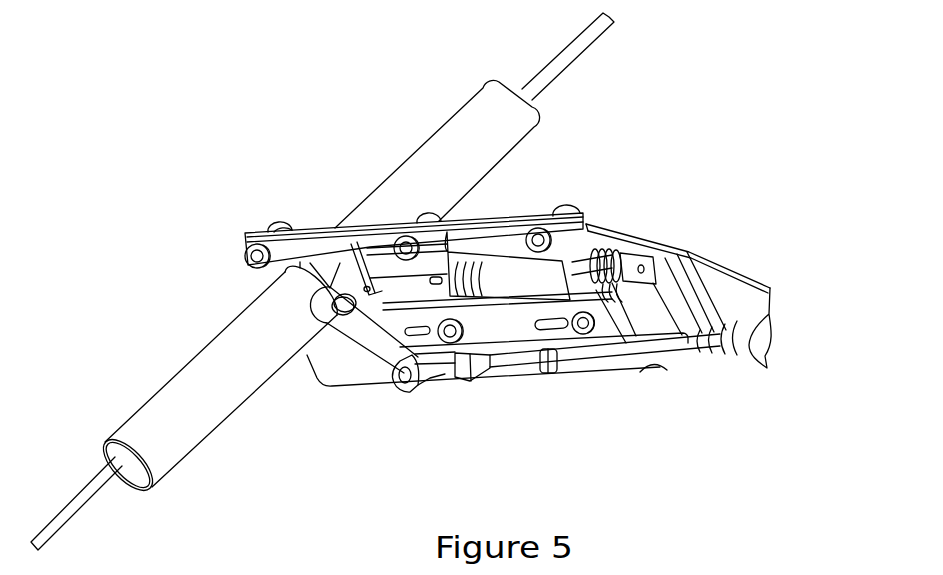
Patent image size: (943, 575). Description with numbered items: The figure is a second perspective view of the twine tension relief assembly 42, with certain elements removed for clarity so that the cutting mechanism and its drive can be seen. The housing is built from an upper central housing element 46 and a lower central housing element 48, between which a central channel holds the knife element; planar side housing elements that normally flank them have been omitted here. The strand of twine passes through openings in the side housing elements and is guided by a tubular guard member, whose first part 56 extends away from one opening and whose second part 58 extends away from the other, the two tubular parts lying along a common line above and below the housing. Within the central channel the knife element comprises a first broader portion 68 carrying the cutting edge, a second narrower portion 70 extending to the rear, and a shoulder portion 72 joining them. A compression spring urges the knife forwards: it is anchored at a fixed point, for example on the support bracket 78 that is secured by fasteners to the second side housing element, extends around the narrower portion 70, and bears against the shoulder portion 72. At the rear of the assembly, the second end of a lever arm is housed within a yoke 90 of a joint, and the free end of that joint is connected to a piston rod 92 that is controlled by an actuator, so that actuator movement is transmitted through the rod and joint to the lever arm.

The twine tension relief assembly 42 is at (175, 213).
The upper central housing element 46 is at (317, 243).
The lower central housing element 48 is at (350, 367).
The first part of tubular guard member 56 is at (425, 153).
The second part of tubular guard member 58 is at (160, 395).
The first broader portion 68 is at (447, 262).
The second narrower portion 70 is at (627, 258).
The shoulder portion 72 is at (537, 228).
The support bracket 78 is at (735, 287).
The yoke 90 is at (430, 378).
The piston rod 92 is at (675, 352).